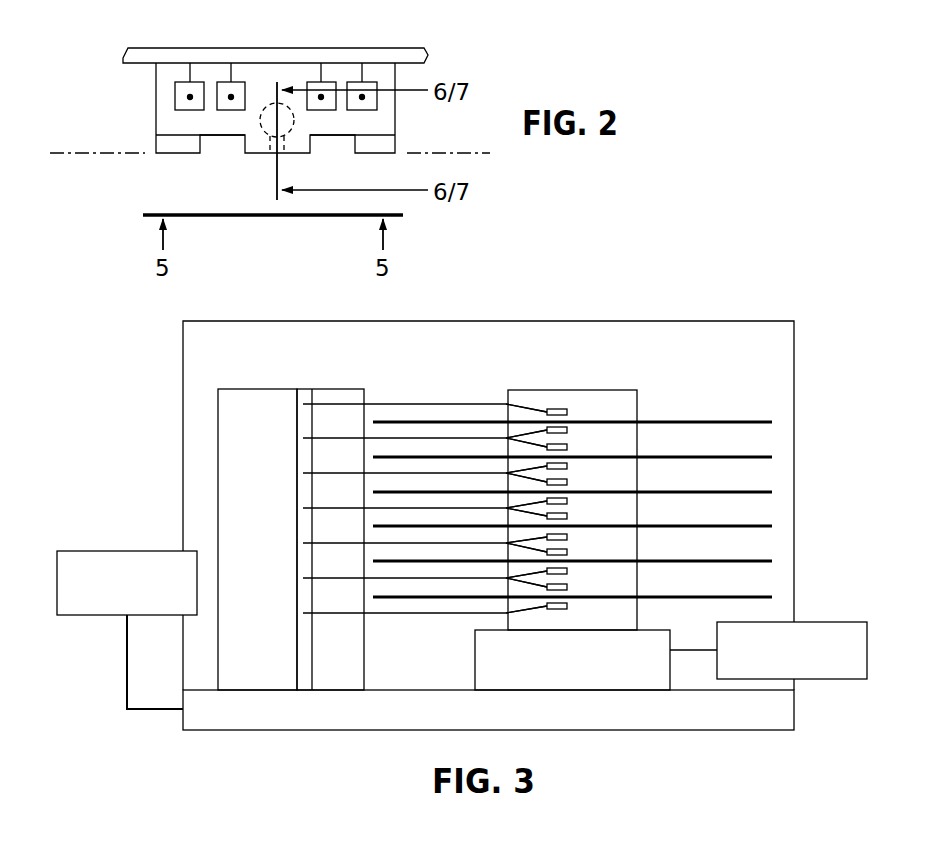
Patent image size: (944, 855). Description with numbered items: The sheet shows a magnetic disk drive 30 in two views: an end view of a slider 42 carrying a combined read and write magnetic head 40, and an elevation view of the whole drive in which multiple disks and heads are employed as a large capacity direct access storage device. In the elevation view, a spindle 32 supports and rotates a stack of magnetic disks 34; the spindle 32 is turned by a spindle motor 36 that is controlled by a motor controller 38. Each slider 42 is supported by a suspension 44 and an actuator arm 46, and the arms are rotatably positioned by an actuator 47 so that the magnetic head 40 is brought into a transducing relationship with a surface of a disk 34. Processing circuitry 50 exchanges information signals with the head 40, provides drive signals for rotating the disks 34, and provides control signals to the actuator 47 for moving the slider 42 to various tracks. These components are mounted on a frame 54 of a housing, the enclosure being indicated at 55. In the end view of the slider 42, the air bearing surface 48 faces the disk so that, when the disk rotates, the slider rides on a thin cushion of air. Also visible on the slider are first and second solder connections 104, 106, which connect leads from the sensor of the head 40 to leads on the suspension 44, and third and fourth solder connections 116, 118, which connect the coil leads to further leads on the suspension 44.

In FIG. 3, the magnetic disk drive 30 is at (688, 393).
In FIG. 3, the spindle 32 is at (627, 390).
In FIG. 3, the magnetic disk 34 is at (772, 424).
In FIG. 3, the spindle motor 36 is at (586, 672).
In FIG. 3, the motor controller 38 is at (827, 680).
In FIG. 2, the magnetic head 40 is at (268, 150).
In FIG. 2, the slider 42 is at (156, 92).
In FIG. 3, the slider 42 is at (566, 432).
In FIG. 3, the suspension 44 is at (539, 440).
In FIG. 3, the actuator arm 46 is at (468, 440).
In FIG. 3, the actuator 47 is at (246, 388).
In FIG. 2, the air bearing surface 48 is at (74, 160).
In FIG. 3, the processing circuitry 50 is at (100, 550).
In FIG. 3, the frame 54 is at (233, 731).
In FIG. 3, the housing 55 is at (702, 321).
In FIG. 2, the first solder connection 104 is at (176, 86).
In FIG. 2, the second solder connection 106 is at (348, 84).
In FIG. 2, the third solder connection 116 is at (218, 86).
In FIG. 2, the fourth solder connection 118 is at (308, 84).